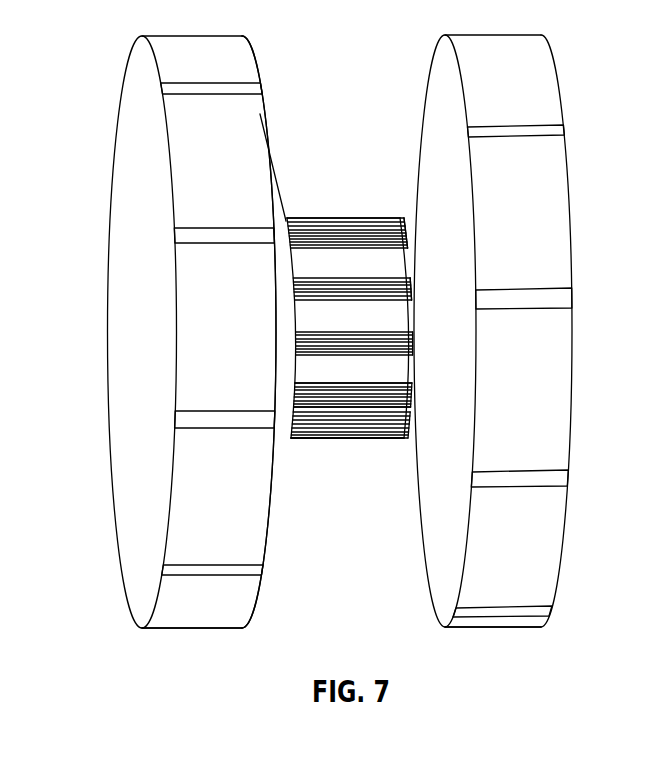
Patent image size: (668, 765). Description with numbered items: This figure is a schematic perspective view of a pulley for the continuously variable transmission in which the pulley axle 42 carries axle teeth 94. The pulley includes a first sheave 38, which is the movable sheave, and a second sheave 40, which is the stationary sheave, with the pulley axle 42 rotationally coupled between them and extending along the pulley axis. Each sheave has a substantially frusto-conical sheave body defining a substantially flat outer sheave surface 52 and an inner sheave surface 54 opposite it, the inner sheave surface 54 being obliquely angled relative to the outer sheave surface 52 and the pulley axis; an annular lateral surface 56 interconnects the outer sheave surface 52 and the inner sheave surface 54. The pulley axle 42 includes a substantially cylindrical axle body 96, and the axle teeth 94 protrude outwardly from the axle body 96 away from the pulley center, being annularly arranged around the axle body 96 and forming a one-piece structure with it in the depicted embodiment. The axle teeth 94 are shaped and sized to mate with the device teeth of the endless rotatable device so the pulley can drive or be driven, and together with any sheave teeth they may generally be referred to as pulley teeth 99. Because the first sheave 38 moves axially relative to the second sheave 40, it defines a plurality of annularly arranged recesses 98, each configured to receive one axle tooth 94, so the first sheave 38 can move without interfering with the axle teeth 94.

The first sheave 38 is at (550, 240).
The second sheave 40 is at (117, 118).
The pulley axle 42 is at (297, 217).
The outer sheave surface 52 is at (108, 348).
The inner sheave surface 54 is at (268, 152).
The annular lateral surface 56 is at (250, 604).
The axle teeth 94 is at (402, 285).
The axle body 96 is at (340, 377).
The recess 98 is at (408, 228).
The pulley teeth 99 is at (340, 437).